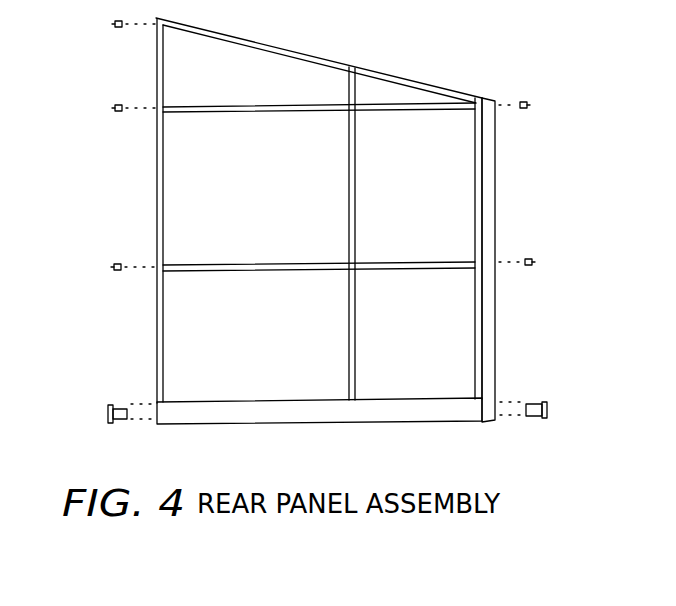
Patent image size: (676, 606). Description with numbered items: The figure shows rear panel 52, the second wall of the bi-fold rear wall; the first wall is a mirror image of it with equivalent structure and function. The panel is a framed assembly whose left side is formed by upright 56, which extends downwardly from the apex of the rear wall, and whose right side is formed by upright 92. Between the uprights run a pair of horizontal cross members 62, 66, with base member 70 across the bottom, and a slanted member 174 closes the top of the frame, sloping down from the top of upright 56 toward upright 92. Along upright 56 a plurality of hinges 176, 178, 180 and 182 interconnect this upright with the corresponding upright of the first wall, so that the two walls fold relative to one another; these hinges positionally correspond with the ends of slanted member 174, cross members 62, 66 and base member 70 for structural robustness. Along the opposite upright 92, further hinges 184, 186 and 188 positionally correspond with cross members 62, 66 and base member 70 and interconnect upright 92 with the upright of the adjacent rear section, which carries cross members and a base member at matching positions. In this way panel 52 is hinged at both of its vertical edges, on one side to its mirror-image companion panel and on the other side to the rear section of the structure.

The second wall 52 is at (330, 461).
The upright 56 is at (164, 206).
The cross member 62 is at (245, 106).
The cross member 66 is at (302, 263).
The base member 70 is at (290, 401).
The upright 92 is at (497, 198).
The slanted member 174 is at (380, 70).
The hinge 176 is at (112, 25).
The hinge 178 is at (112, 106).
The hinge 180 is at (115, 265).
The hinge 182 is at (110, 405).
The hinge 184 is at (528, 104).
The hinge 186 is at (533, 262).
The hinge 188 is at (547, 404).